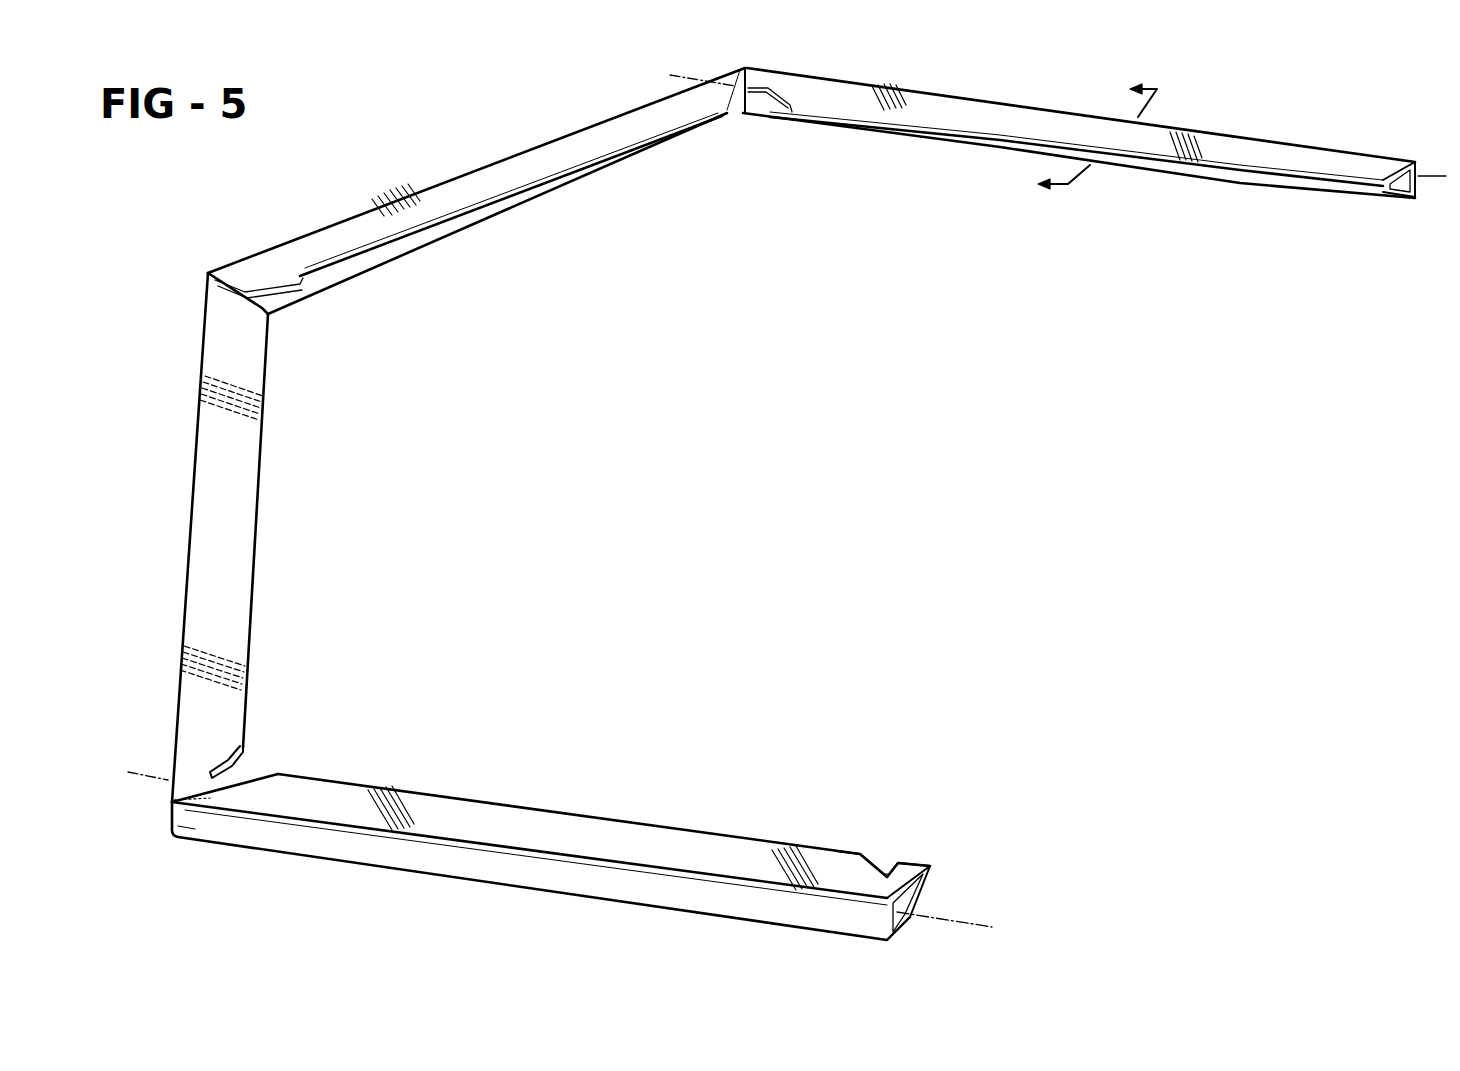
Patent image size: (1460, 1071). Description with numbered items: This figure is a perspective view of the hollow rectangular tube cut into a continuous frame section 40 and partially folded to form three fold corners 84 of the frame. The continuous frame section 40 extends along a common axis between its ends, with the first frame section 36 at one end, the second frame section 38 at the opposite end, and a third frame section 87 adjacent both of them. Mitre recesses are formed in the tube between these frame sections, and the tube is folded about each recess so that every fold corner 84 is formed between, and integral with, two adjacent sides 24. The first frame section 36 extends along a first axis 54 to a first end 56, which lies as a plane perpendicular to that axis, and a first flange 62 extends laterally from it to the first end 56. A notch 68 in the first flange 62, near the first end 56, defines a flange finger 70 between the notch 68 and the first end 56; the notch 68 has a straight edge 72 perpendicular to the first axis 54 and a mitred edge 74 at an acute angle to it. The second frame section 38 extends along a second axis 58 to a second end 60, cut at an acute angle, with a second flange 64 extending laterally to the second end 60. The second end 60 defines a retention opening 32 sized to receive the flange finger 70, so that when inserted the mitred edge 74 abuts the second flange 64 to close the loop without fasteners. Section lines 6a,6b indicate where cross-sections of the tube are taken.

The sides 24 is at (766, 495).
The continuous frame section 40 is at (537, 134).
The first frame section 36 is at (603, 817).
The second frame section 38 is at (1140, 168).
The third frame section 87 is at (472, 212).
The fold corner 84 is at (747, 70).
The retention opening 32 is at (1400, 198).
The second axis 58 is at (1428, 174).
The second end 60 is at (1412, 200).
The second flange 64 is at (1274, 182).
The section lines 6a,6b is at (1105, 136).
The first axis 54 is at (972, 906).
The first end 56 is at (906, 925).
The first flange 62 is at (823, 847).
The notch 68 is at (888, 852).
The flange finger 70 is at (913, 862).
The straight edge 72 is at (898, 861).
The mitred edge 74 is at (871, 860).